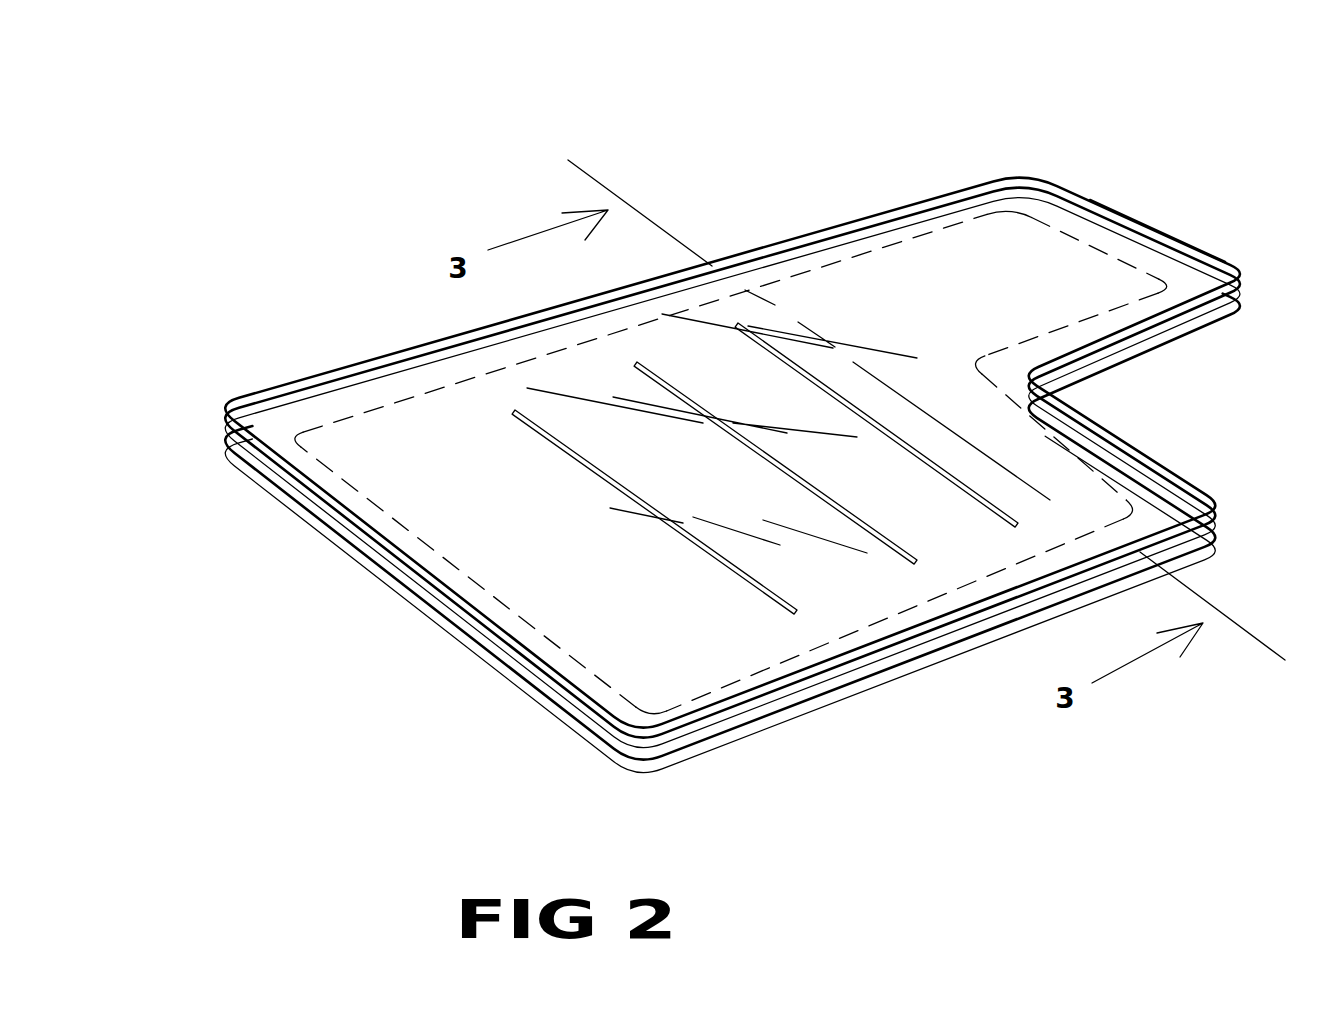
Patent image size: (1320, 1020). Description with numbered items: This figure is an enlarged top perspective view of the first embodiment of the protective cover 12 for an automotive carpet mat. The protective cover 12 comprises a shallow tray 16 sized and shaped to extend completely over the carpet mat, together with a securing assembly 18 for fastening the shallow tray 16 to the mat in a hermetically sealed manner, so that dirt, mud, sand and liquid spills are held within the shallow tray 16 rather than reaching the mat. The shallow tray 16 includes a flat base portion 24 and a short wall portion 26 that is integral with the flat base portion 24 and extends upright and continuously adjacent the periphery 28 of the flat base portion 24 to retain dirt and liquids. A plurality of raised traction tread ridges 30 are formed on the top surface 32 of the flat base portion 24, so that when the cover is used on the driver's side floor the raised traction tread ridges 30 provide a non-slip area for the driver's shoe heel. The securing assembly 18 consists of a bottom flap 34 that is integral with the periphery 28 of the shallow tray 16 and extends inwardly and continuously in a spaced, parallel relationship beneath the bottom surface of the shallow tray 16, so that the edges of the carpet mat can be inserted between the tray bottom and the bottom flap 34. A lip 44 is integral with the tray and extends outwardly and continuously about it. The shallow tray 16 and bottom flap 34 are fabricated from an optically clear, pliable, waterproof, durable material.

The protective cover 12 is at (893, 150).
The shallow tray 16 is at (304, 368).
The securing assembly 18 is at (712, 680).
The flat base portion 24 is at (530, 605).
The short wall portion 26 is at (1150, 202).
The periphery 28 is at (568, 697).
The raised traction tread ridges 30 is at (560, 432).
The top surface 32 is at (590, 386).
The bottom flap 34 is at (496, 593).
The lip 44 is at (748, 717).